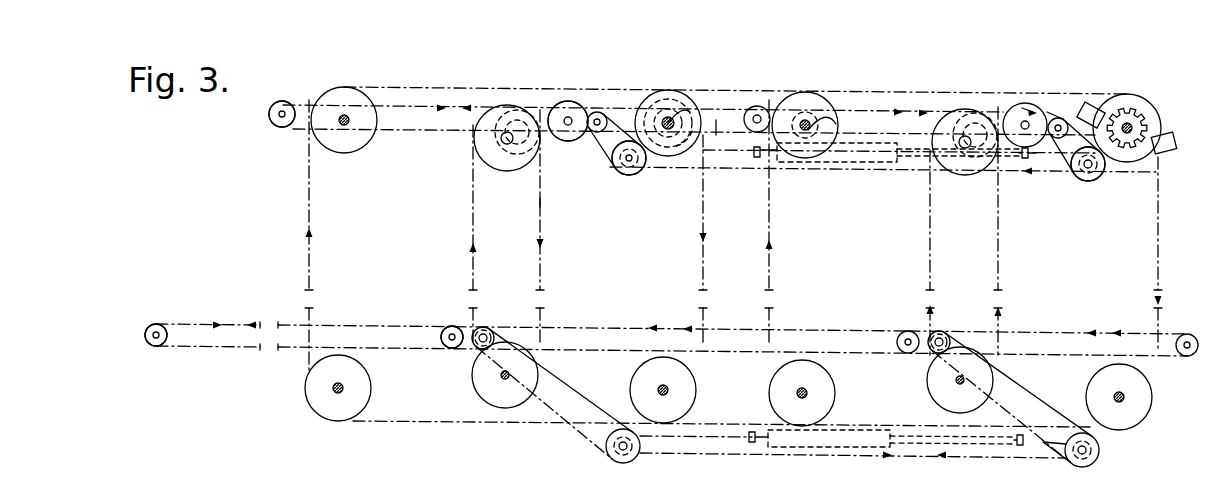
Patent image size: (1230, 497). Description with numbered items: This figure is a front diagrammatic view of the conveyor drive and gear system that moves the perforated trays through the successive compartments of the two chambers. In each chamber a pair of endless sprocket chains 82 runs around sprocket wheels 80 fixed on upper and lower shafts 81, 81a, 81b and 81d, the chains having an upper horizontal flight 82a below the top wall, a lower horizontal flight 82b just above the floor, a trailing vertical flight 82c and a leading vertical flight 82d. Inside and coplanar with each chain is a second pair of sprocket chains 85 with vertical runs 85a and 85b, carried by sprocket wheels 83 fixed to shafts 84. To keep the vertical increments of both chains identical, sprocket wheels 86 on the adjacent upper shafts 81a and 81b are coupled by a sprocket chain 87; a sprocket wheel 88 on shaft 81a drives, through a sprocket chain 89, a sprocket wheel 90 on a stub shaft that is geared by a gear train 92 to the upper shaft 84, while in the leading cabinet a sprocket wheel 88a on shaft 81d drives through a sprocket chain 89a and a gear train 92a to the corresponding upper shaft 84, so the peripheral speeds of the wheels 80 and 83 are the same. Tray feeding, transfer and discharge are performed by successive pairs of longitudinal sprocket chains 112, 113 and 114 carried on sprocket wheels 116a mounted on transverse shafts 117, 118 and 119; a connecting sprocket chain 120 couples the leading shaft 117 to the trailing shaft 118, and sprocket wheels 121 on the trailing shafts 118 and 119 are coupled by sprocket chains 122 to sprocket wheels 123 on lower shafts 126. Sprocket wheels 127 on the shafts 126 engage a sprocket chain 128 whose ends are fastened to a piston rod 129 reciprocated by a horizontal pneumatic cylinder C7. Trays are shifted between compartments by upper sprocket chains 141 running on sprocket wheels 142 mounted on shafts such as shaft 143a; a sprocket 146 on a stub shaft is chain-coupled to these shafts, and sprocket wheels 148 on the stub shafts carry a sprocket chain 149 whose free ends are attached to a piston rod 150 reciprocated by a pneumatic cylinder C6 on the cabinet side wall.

The sprocket wheel 80 is at (341, 96).
The shaft 81 is at (344, 126).
The shaft 81a is at (668, 118).
The shaft 81b is at (807, 121).
The upper forward shaft 81d is at (1133, 126).
The endless sprocket chain 82 is at (428, 89).
The upper horizontal flight 82a is at (472, 88).
The lower horizontal flight 82b is at (493, 426).
The trailing vertical flight 82c is at (308, 238).
The leading vertical flight 82d is at (703, 290).
The sprocket wheel 83 is at (507, 171).
The shaft 84 is at (501, 139).
The endless sprocket chain 85 is at (546, 208).
The vertical run 85a is at (472, 222).
The vertical run 85b is at (542, 250).
The sprocket wheel 86 is at (686, 112).
The sprocket chain 87 is at (713, 137).
The sprocket wheel 88 is at (680, 164).
The sprocket wheel 88a is at (1112, 108).
The sprocket chain 89 is at (620, 100).
The sprocket chain 89a is at (1067, 103).
The sprocket wheel 90 is at (570, 109).
The gear train 92 is at (546, 104).
The gear train 92a is at (1000, 114).
The endless sprocket chain 112 is at (283, 325).
The endless sprocket chain 113 is at (628, 313).
The endless sprocket chain 114 is at (1050, 323).
The sprocket wheel 116a is at (155, 346).
The transverse shaft 117 is at (157, 324).
The transverse shaft 118 is at (491, 333).
The transverse shaft 119 is at (949, 335).
The connecting sprocket chain 120 is at (462, 347).
The sprocket wheel 121 is at (485, 330).
The sprocket chain 122 is at (565, 383).
The sprocket wheel 123 is at (625, 456).
The shaft 126 is at (608, 447).
The sprocket wheel 127 is at (618, 458).
The sprocket chain 128 is at (722, 455).
The piston rod 129 is at (923, 444).
The sprocket chain 141 is at (430, 136).
The sprocket wheel 142 is at (285, 108).
The shaft 143a is at (274, 122).
The sprocket 146 is at (622, 170).
The sprocket wheel 148 is at (634, 166).
The sprocket chain 149 is at (827, 172).
The piston rod 150 is at (920, 153).
The pneumatic cylinder C6 is at (850, 162).
The horizontal pneumatic cylinder C7 is at (817, 447).